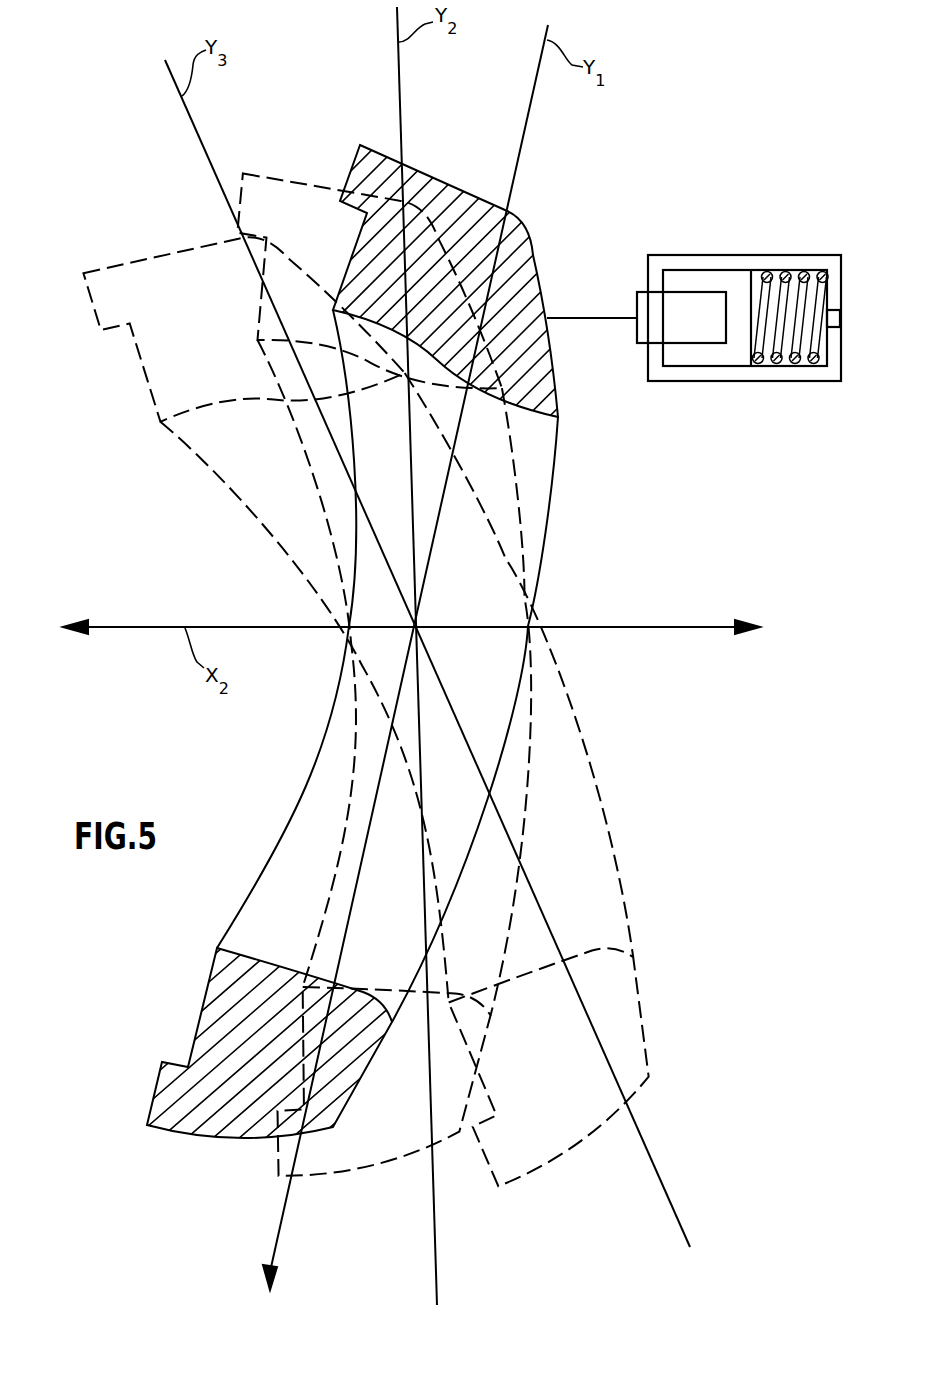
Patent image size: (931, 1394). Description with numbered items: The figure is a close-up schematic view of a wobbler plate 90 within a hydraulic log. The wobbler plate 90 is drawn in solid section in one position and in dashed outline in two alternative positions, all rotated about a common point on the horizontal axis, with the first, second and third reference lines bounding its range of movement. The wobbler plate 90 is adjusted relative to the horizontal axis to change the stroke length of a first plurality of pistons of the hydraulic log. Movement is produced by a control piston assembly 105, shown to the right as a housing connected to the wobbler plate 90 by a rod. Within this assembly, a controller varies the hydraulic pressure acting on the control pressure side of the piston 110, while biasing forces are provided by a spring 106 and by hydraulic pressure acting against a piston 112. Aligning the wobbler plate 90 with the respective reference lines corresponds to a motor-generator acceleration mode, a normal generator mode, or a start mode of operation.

The wobbler plate 90 is at (537, 256).
The actuator assembly 105 is at (739, 244).
The piston 110 is at (741, 262).
The piston 112 is at (697, 305).
The spring 106 is at (782, 278).